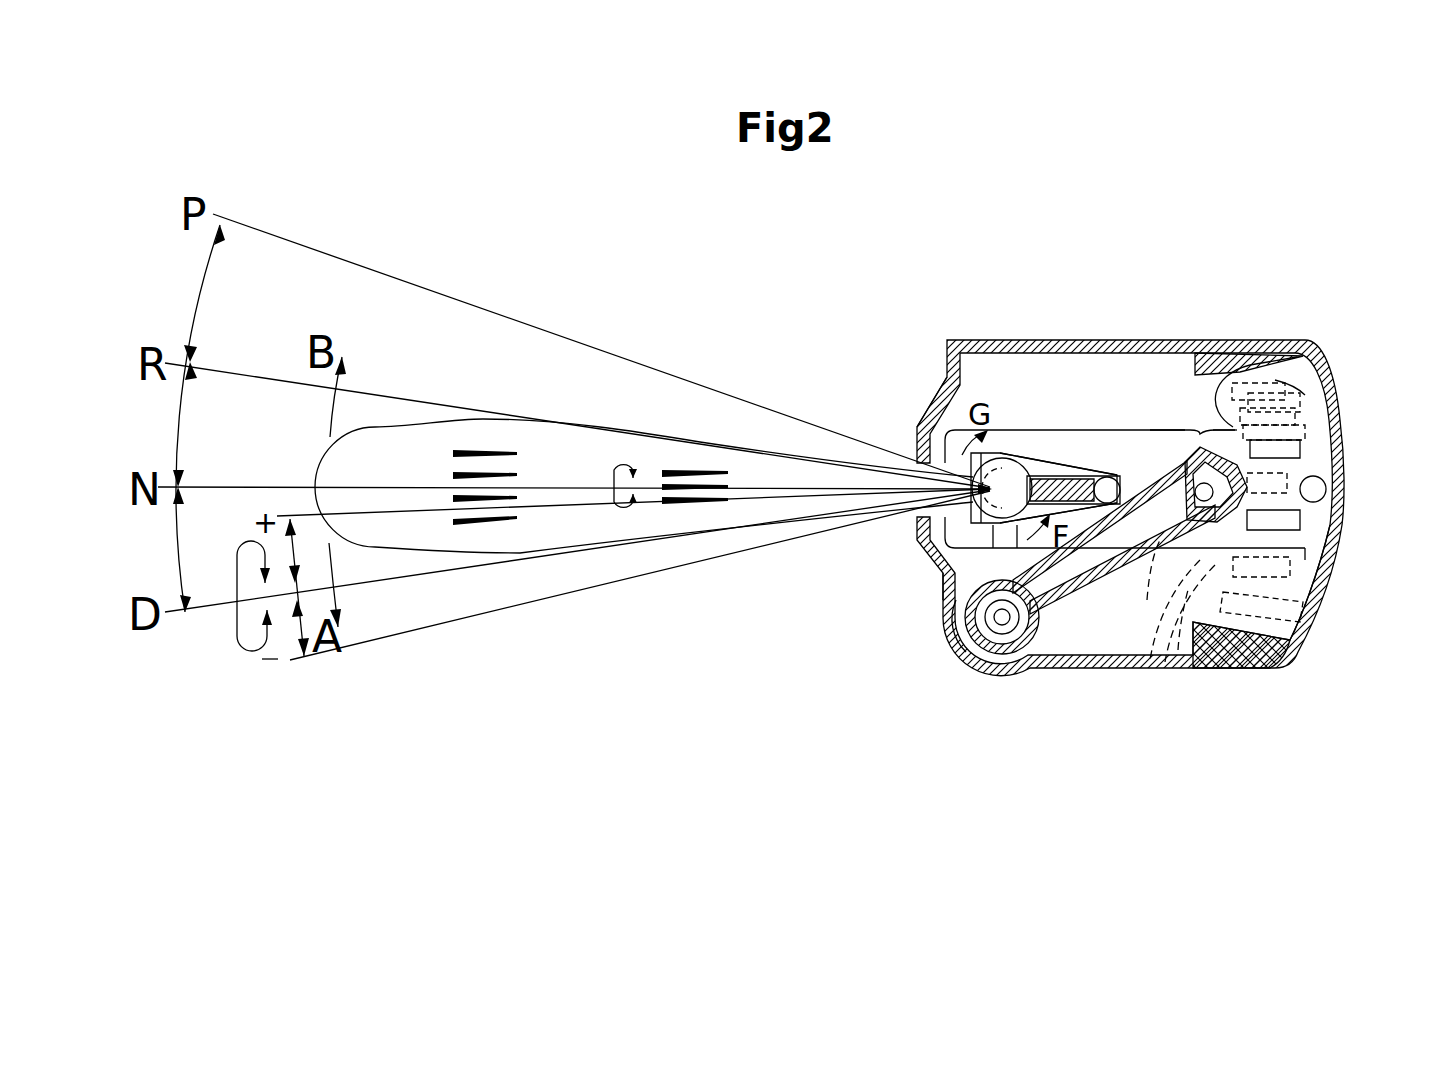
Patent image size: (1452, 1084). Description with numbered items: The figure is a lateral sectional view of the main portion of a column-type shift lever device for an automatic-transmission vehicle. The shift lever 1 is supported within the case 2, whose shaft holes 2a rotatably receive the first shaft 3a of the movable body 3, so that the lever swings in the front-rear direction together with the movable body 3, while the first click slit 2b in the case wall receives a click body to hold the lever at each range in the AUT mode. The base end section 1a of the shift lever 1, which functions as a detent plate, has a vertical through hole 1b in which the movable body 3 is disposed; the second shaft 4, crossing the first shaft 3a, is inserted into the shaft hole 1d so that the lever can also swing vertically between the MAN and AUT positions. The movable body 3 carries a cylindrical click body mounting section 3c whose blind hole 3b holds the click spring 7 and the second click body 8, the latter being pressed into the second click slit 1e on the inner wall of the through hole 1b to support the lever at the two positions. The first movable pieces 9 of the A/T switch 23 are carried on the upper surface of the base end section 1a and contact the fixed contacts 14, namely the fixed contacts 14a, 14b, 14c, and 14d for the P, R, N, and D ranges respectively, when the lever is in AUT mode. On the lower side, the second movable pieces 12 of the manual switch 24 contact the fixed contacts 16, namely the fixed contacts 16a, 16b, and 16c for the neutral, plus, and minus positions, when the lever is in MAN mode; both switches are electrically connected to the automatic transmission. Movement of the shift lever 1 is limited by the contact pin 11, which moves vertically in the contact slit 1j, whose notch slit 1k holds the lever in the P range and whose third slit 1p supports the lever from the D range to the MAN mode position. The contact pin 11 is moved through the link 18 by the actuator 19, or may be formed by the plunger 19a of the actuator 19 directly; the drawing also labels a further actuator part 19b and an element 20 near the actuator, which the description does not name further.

The shift lever 1 is at (467, 423).
The base end section 1a is at (1183, 430).
The through hole 1b is at (985, 548).
The shaft hole 1d is at (952, 352).
The second click slit 1e is at (1152, 430).
The contact slit 1j is at (1180, 650).
The notch slit 1k is at (1238, 395).
The third slit 1p is at (1147, 600).
The case 2 is at (986, 341).
The shaft holes 2a is at (930, 613).
The first click slit 2b is at (1310, 555).
The movable body 3 is at (1100, 476).
The first shaft 3a is at (1025, 470).
The blind hole 3b is at (1063, 476).
The click body mounting section 3c is at (1088, 476).
The second shaft 4 is at (978, 437).
The click spring 7 is at (1043, 476).
The second click body 8 is at (1110, 476).
The first movable pieces 9 is at (1330, 473).
The contact pin 11 is at (1215, 430).
The second movable pieces 12 is at (1288, 395).
The fixed contacts 14 is at (1335, 652).
The fixed contacts 14a is at (1257, 670).
The fixed contacts 14b is at (1318, 618).
The fixed contacts 14c is at (1325, 600).
The fixed contacts 14d is at (1330, 500).
The fixed contacts 16 is at (1305, 375).
The fixed contacts 16a is at (1318, 392).
The fixed contacts 16b is at (1328, 407).
The fixed contacts 16c is at (1305, 385).
The link 18 is at (1068, 645).
The actuator 19 is at (1040, 660).
The plunger 19a is at (958, 660).
The bearing pin 19b is at (1010, 680).
The pivot head 20 is at (1108, 600).
The A/T switch 23 is at (1223, 667).
The manual switch 24 is at (1274, 383).